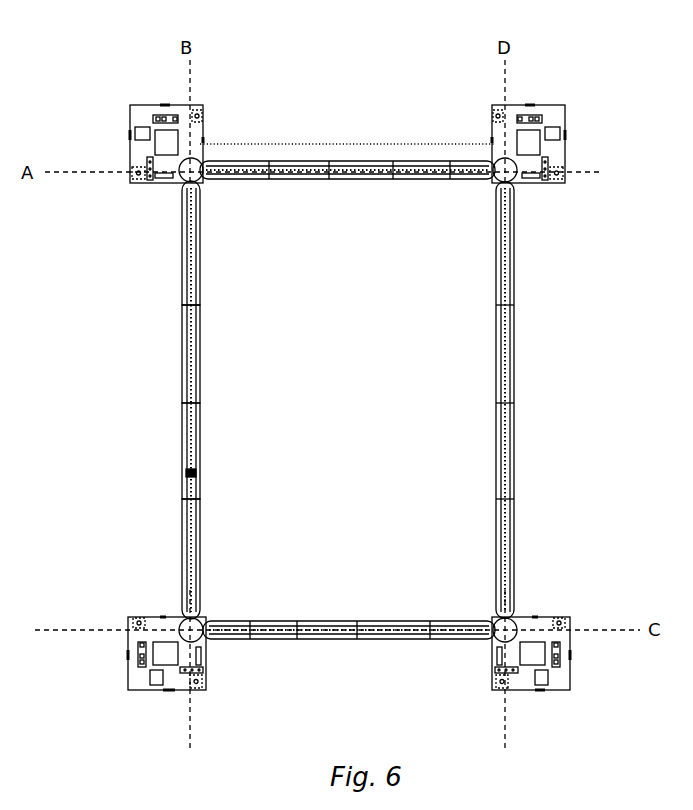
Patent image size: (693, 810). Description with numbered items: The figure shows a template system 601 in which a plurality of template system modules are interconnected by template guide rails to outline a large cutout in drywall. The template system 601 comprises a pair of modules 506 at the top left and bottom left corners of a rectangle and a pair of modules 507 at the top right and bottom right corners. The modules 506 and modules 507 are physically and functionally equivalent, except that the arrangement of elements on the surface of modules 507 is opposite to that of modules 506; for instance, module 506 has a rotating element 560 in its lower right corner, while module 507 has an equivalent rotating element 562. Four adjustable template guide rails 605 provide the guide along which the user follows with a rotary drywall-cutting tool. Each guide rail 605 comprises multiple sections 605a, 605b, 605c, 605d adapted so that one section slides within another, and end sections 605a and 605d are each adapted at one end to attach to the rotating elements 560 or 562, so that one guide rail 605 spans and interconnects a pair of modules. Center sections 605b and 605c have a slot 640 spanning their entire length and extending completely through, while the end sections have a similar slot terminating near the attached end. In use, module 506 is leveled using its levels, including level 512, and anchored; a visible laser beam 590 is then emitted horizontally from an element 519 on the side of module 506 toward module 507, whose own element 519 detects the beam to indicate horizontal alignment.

The module 506 is at (126, 383).
The module 507 is at (566, 126).
The level 512 is at (119, 105).
The element 519 is at (172, 693).
The rotating element 560 is at (194, 158).
The rotating element 562 is at (503, 157).
The laser beam 590 is at (311, 144).
The template system 601 is at (355, 124).
The template guide rail 605 is at (329, 400).
The end section 605a is at (203, 281).
The center section 605b is at (203, 351).
The center section 605c is at (203, 452).
The end section 605d is at (203, 538).
The slot 640 is at (181, 473).